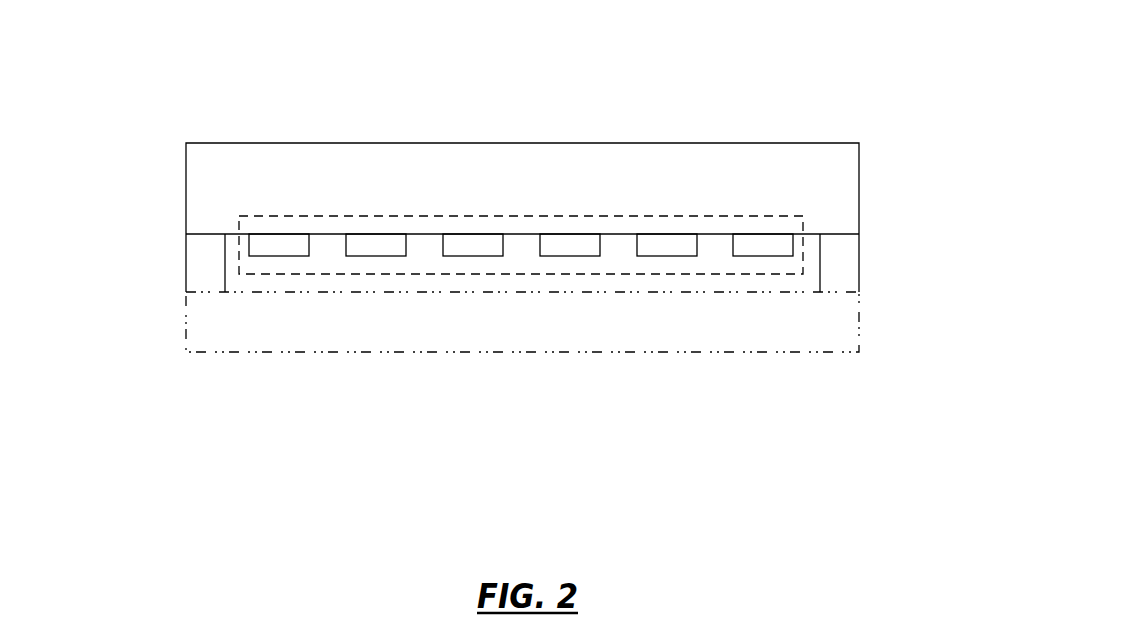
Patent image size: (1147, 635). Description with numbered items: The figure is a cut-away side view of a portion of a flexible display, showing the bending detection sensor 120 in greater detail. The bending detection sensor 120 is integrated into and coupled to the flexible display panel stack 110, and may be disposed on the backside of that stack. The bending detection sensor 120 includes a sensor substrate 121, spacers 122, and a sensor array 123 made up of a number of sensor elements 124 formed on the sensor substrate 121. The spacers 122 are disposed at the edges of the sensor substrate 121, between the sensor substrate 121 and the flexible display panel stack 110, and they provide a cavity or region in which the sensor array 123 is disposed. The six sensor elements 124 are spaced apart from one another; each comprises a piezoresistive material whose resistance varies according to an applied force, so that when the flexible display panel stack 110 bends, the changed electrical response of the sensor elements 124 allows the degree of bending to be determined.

The flexible display panel stack 110 is at (689, 332).
The bending detection sensor 120 is at (425, 106).
The sensor substrate 121 is at (345, 204).
The spacers 122 is at (915, 207).
The sensor array 123 is at (772, 213).
The sensor elements 124 is at (755, 247).